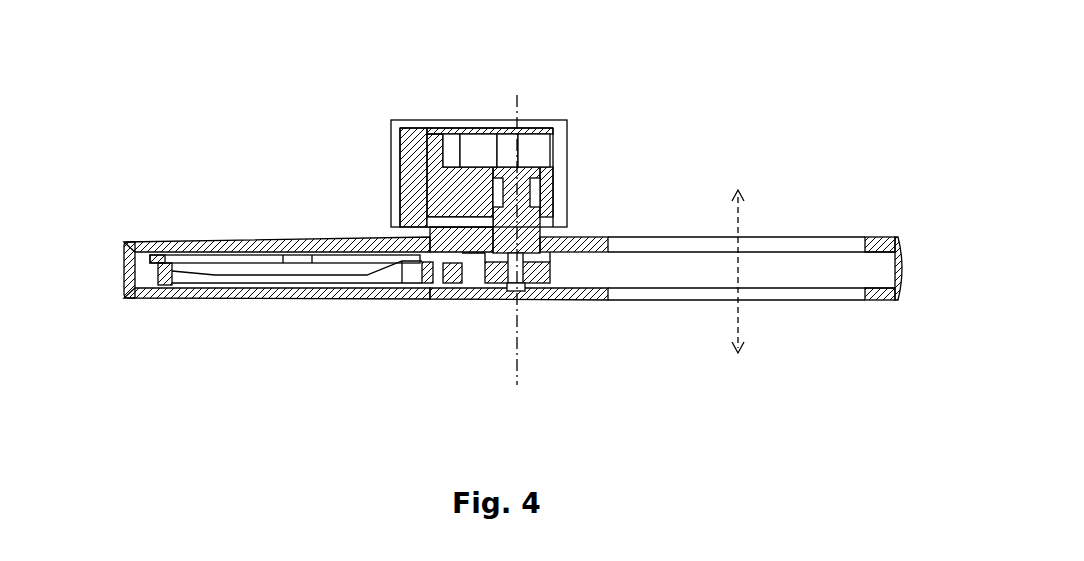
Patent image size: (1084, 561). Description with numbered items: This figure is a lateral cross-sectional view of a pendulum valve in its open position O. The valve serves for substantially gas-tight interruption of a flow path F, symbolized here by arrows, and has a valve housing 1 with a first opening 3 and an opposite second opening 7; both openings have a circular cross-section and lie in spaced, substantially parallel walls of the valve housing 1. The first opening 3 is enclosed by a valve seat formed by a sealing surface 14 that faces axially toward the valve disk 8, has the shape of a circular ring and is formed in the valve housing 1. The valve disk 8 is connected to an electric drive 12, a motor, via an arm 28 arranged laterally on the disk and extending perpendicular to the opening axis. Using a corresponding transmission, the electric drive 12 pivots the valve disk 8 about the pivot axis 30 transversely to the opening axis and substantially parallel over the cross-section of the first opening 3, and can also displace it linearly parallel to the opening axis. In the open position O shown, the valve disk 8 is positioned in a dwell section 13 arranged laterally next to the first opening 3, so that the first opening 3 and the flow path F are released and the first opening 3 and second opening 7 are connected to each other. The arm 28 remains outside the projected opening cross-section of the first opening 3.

The valve housing 1 is at (897, 245).
The first opening 3 is at (810, 318).
The second opening 7 is at (803, 207).
The valve disk 8 is at (135, 272).
The electric drive 12 is at (553, 97).
The dwell section 13 is at (142, 278).
The sealing surface 14 is at (605, 289).
The arm 28 is at (473, 270).
The pivot axis 30 is at (517, 363).
The flow path F is at (738, 193).
The open position O is at (586, 282).